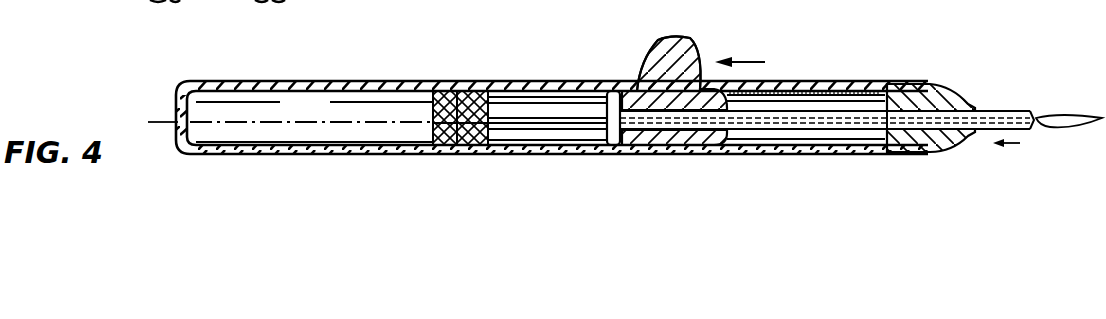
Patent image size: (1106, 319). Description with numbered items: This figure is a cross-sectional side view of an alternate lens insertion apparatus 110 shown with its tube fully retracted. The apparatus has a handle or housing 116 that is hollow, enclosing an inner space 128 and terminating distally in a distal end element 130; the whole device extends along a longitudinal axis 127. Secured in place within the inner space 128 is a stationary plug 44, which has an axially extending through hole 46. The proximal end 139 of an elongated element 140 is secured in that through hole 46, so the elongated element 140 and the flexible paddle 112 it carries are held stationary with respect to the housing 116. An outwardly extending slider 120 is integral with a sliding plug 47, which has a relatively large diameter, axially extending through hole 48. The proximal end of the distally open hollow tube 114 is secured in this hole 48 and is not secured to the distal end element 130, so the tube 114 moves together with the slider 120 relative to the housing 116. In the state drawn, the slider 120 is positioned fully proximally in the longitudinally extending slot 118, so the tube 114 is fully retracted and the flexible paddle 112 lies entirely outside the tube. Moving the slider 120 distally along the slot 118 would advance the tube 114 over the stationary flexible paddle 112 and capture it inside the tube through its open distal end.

The stationary plug 44 is at (433, 117).
The axially extending through hole 46 is at (440, 155).
The sliding plug 47 is at (697, 143).
The axially extending through hole 48 is at (613, 91).
The lens insertion apparatus 110 is at (873, 165).
The flexible paddle 112 is at (1062, 128).
The tube 114 is at (1012, 110).
The housing 116 is at (838, 161).
The slot 118 is at (846, 60).
The slider 120 is at (680, 45).
The longitudinal axis 127 is at (235, 122).
The inner space 128 is at (312, 118).
The distal end element 130 is at (940, 95).
The proximal end 139 is at (484, 60).
The elongated element 140 is at (566, 140).